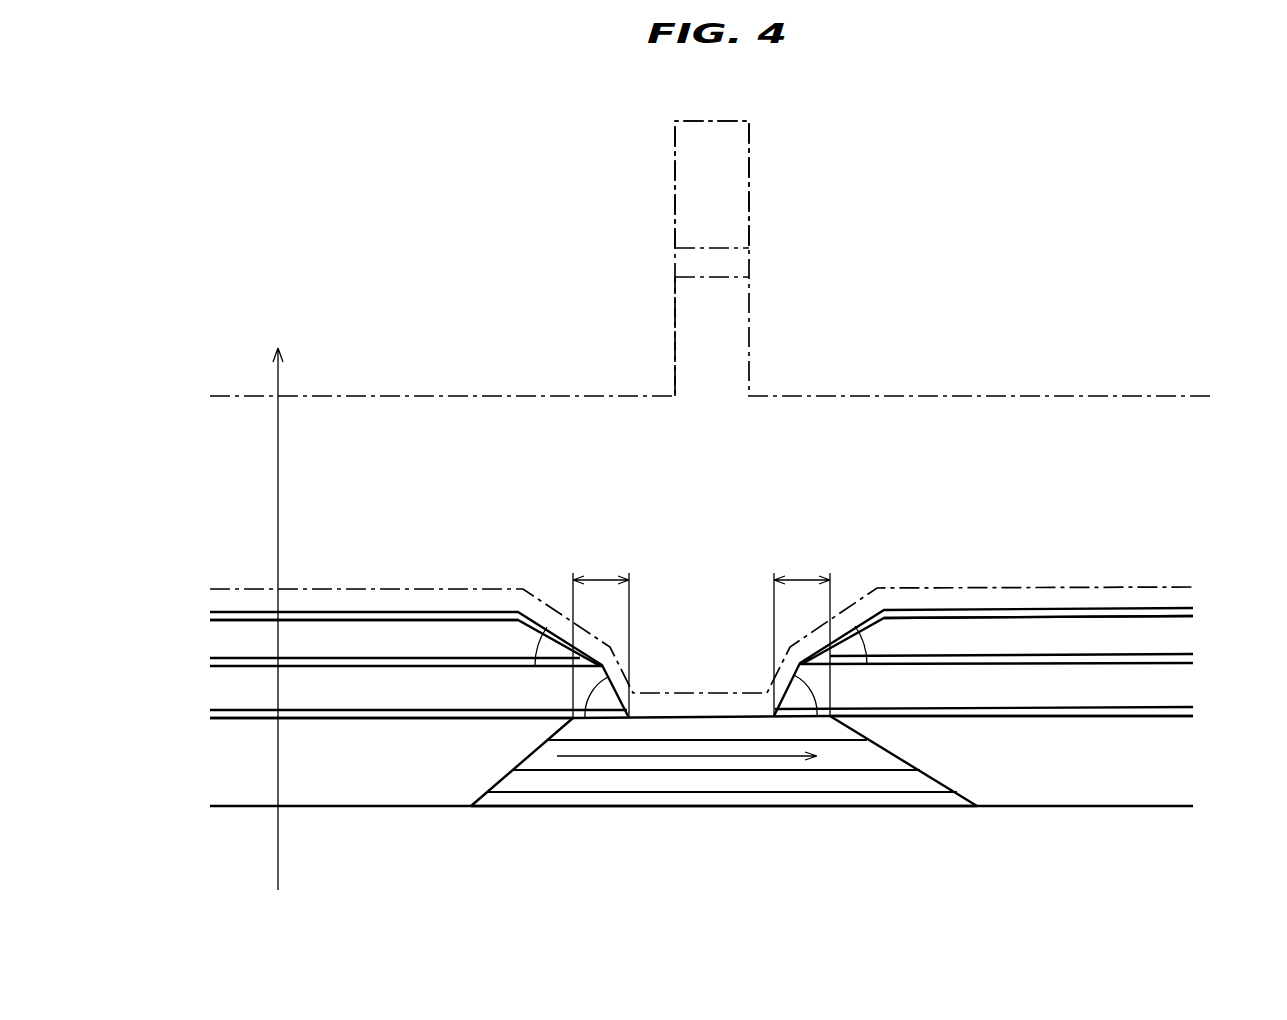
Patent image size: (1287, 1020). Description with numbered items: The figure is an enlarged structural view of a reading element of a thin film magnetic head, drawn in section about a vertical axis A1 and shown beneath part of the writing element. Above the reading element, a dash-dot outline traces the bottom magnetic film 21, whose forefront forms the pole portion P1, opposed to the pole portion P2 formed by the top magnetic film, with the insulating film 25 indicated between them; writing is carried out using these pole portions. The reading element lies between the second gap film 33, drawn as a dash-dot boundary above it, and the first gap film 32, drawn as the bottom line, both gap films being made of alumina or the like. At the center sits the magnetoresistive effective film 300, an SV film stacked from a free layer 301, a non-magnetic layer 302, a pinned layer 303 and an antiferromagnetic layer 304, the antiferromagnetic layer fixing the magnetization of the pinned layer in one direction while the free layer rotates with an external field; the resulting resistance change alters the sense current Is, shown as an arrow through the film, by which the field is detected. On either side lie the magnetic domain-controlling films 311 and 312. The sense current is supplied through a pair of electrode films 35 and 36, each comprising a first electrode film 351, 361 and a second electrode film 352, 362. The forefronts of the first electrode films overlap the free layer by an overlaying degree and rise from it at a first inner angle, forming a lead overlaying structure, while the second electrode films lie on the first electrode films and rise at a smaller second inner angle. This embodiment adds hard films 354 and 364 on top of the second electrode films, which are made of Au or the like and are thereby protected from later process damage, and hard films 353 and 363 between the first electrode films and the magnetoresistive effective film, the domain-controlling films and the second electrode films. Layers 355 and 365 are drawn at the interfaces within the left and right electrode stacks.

The bottom magnetic film 21 is at (972, 395).
The insulating film 25 is at (675, 264).
The pole portion P1 is at (675, 341).
The pole portion P2 is at (692, 160).
The axis line A1 is at (281, 603).
The second gap film 33 is at (338, 588).
The first gap film 32 is at (218, 845).
The magnetic domain-controlling film 311 is at (225, 767).
The magnetic domain-controlling film 312 is at (1172, 764).
The magnetoresistive effective film 300 is at (724, 755).
The free layer 301 is at (742, 733).
The non-magnetic layer 302 is at (679, 752).
The pinned layer 303 is at (645, 780).
The antiferromagnetic layer 304 is at (542, 808).
The sense current Is is at (745, 755).
The electrode film 35 is at (381, 628).
The first electrode film 351 is at (225, 692).
The second electrode film 352 is at (225, 639).
The hard film 353 is at (412, 712).
The hard film 354 is at (433, 624).
The interface of source electrode 355 is at (328, 662).
The electrode film 36 is at (1024, 651).
The first electrode film 361 is at (1172, 692).
The second electrode film 362 is at (1172, 638).
The hard film 363 is at (992, 712).
The hard film 364 is at (974, 617).
The interface of drain electrode 365 is at (1088, 660).